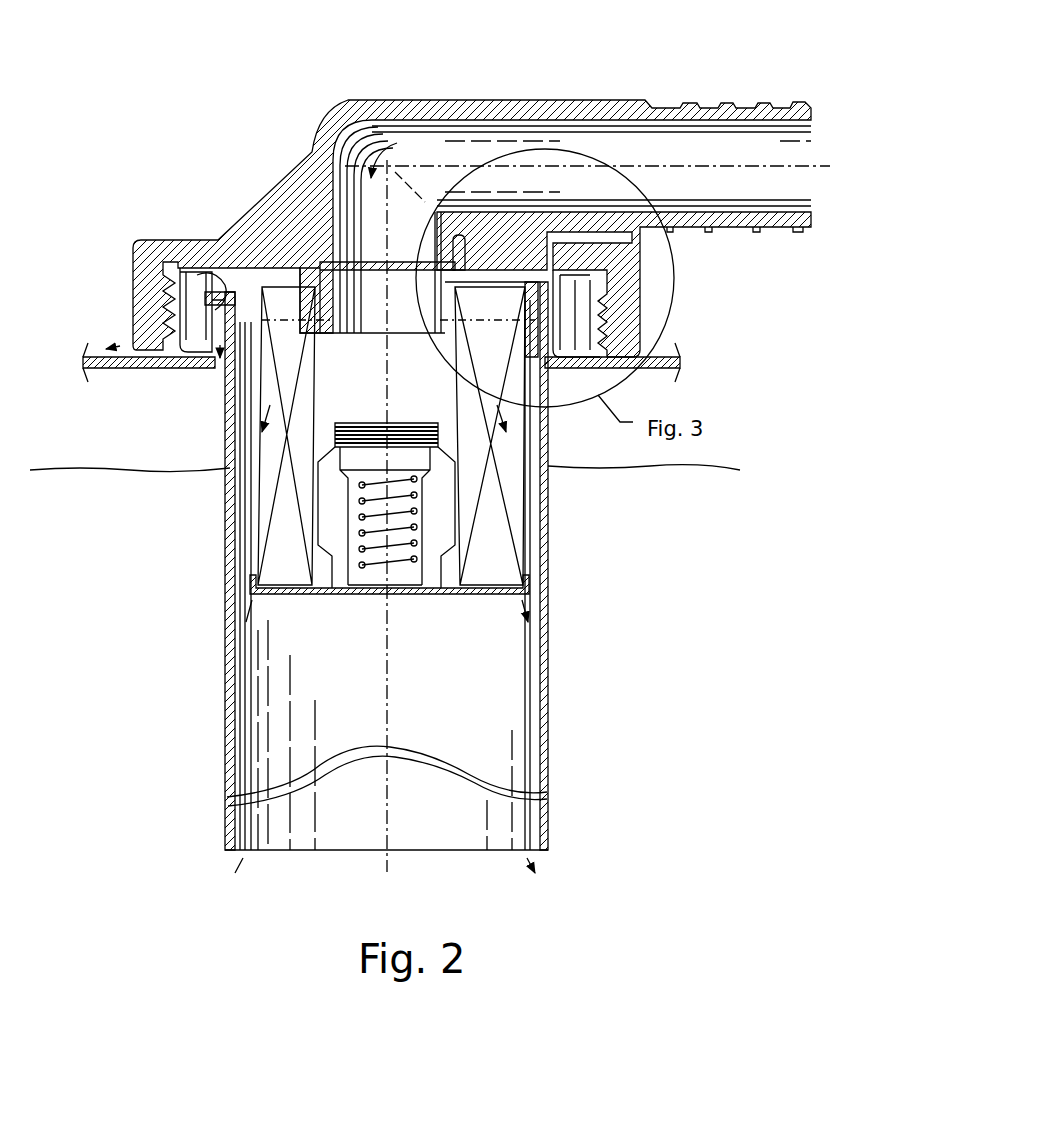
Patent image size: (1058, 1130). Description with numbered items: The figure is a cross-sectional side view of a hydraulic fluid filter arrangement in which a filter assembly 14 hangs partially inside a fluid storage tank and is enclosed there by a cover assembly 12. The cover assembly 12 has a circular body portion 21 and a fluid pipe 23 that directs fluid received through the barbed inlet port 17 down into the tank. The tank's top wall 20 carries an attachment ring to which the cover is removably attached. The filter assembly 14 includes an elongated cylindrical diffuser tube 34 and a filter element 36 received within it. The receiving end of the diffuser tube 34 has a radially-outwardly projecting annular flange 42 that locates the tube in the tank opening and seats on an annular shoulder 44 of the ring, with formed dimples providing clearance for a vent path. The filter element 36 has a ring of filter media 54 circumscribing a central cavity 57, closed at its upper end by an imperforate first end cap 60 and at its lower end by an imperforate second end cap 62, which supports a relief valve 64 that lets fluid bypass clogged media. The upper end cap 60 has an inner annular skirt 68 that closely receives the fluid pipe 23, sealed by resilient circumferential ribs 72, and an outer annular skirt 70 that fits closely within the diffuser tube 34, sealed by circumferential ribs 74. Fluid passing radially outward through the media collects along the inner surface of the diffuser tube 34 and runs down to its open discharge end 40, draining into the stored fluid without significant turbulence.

The cover assembly 12 is at (556, 60).
The filter assembly 14 is at (162, 713).
The inlet port 17 is at (738, 103).
The top wall 20 is at (668, 358).
The circular body portion 21 is at (273, 207).
The fluid pipe 23 is at (443, 340).
The diffuser tube 34 is at (546, 720).
The filter element 36 is at (520, 537).
The discharge end 40 is at (548, 842).
The annular flange 42 is at (195, 270).
The annular shoulder 44 is at (172, 314).
The filter media ring 54 is at (512, 503).
The central cavity 57 is at (418, 417).
The first end cap 60 is at (308, 218).
The second end cap 62 is at (533, 582).
The relief valve 64 is at (327, 543).
The inner annular skirt 68 is at (305, 333).
The outer annular skirt 70 is at (220, 368).
The circumferential ribs 72 is at (313, 305).
The circumferential ribs 74 is at (207, 323).